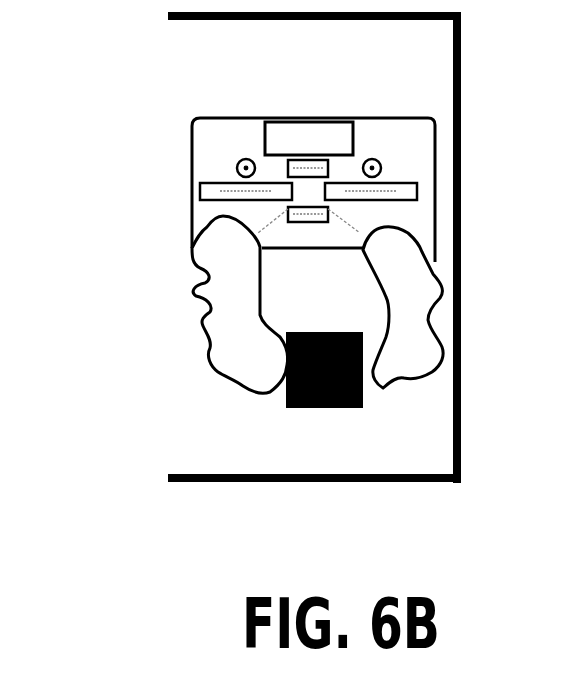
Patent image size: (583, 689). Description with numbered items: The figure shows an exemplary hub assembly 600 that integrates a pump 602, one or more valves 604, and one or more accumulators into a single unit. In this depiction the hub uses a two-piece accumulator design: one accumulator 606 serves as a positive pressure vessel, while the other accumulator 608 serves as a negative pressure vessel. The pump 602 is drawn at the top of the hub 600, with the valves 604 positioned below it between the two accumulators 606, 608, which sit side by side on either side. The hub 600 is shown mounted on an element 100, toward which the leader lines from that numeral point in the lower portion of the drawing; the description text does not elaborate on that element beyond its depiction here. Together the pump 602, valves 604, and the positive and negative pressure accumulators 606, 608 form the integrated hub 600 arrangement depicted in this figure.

The absorbent article 100 is at (340, 440).
The hub 600 is at (187, 120).
The pump 602 is at (263, 138).
The valves 604 is at (325, 215).
The accumulator 606 is at (189, 197).
The accumulator 608 is at (475, 152).